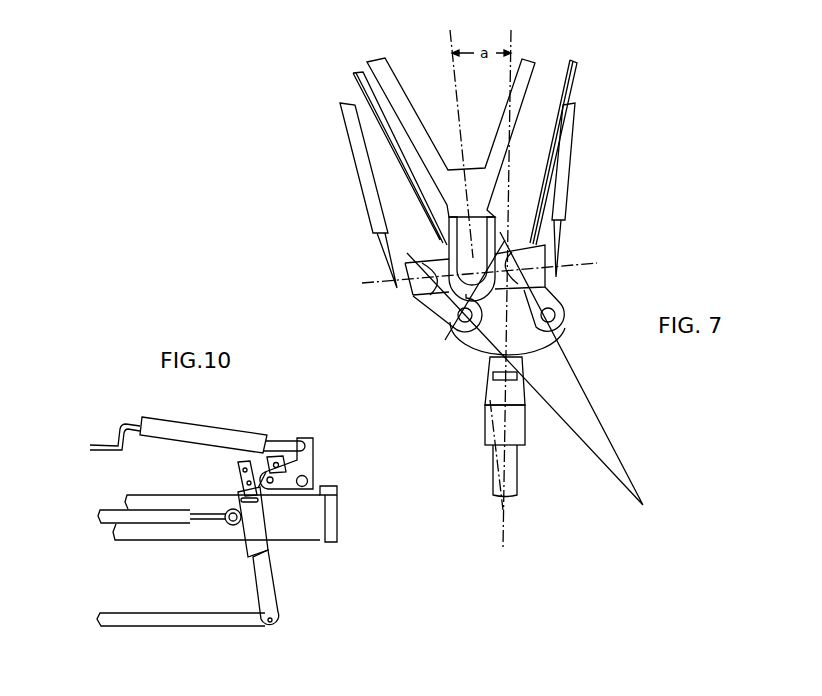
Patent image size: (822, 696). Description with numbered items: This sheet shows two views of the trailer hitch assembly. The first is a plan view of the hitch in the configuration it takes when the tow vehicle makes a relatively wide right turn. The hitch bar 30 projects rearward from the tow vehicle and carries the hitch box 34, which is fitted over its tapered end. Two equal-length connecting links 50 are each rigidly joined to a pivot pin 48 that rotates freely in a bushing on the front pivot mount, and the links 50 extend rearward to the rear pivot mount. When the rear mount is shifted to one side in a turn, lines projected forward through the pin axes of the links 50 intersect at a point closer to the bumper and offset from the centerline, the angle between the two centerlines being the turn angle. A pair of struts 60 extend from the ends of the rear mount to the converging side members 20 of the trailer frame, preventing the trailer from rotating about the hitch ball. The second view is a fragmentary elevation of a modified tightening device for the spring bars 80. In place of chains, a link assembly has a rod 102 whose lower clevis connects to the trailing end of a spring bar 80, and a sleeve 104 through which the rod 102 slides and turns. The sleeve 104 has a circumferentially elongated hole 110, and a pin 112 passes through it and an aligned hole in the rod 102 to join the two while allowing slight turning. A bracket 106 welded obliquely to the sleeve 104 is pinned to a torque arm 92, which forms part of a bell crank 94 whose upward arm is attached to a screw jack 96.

In FIG. 7, the side members 20 is at (510, 88).
In FIG. 10, the side members 20 is at (177, 533).
In FIG. 7, the struts 60 is at (613, 162).
In FIG. 7, the connecting links 50 is at (597, 297).
In FIG. 7, the pivot pin 48 is at (597, 330).
In FIG. 7, the hitch box 34 is at (493, 430).
In FIG. 7, the hitch bar 30 is at (493, 473).
In FIG. 10, the screw jack 96 is at (197, 428).
In FIG. 10, the bell crank 94 is at (310, 458).
In FIG. 10, the bracket 106 is at (270, 520).
In FIG. 10, the elongated hole 110 is at (243, 535).
In FIG. 10, the pin 112 is at (242, 496).
In FIG. 10, the sleeve 104 is at (252, 553).
In FIG. 10, the rod 102 is at (272, 600).
In FIG. 10, the torque arm 92 is at (290, 483).
In FIG. 10, the spring bars 80 is at (160, 627).